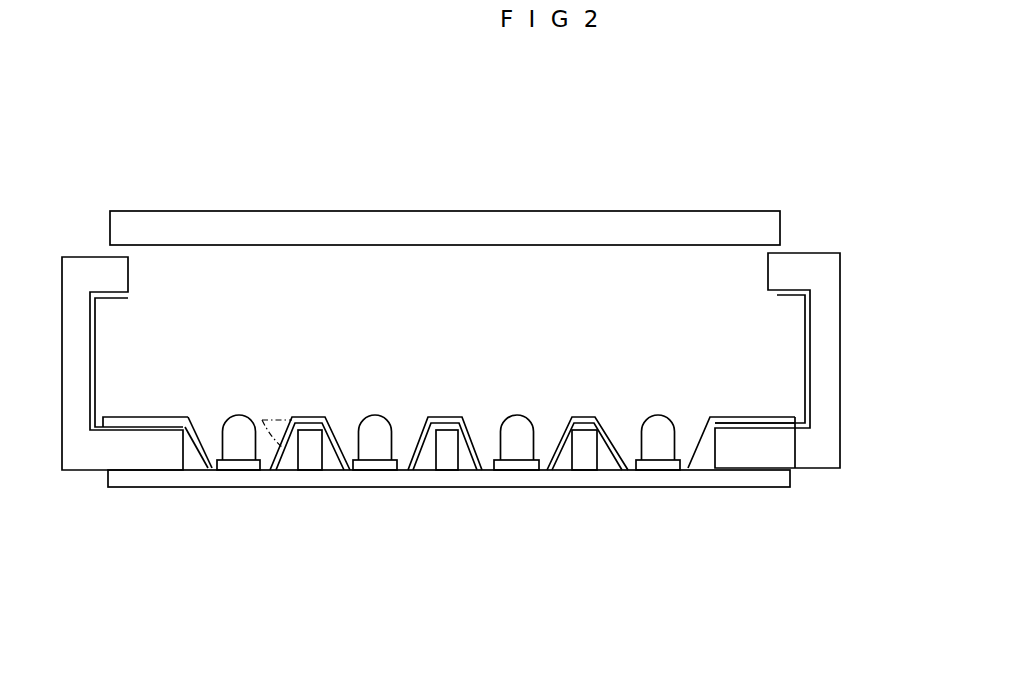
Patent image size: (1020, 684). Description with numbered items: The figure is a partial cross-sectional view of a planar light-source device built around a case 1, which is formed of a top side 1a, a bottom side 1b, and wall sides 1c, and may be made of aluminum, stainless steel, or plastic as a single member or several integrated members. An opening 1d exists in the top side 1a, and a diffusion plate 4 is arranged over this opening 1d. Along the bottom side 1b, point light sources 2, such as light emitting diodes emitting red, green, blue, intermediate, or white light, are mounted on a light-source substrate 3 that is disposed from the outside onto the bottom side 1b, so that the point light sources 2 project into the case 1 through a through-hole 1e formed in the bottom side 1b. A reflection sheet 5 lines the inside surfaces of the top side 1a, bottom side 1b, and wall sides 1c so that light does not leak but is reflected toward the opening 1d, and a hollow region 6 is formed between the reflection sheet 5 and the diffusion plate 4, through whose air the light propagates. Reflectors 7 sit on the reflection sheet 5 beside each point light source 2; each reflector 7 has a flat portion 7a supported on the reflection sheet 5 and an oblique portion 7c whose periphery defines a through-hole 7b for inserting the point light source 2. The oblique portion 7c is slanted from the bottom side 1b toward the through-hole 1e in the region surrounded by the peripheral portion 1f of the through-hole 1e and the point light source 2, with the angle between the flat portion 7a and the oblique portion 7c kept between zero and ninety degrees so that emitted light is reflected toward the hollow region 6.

The case 1 is at (98, 453).
The top side 1a is at (768, 322).
The bottom side 1b is at (777, 450).
The wall sides 1c is at (107, 343).
The opening 1d is at (166, 278).
The through-hole 1e is at (333, 455).
The peripheral portion 1f is at (600, 443).
The point light sources 2 is at (237, 453).
The light-source substrate 3 is at (732, 477).
The diffusion plate 4 is at (422, 230).
The reflection sheet 5 is at (805, 335).
The hollow region 6 is at (318, 325).
The reflectors 7 is at (723, 420).
The flat portion 7a is at (143, 397).
The through-hole 7b is at (478, 396).
The oblique portion 7c is at (204, 419).